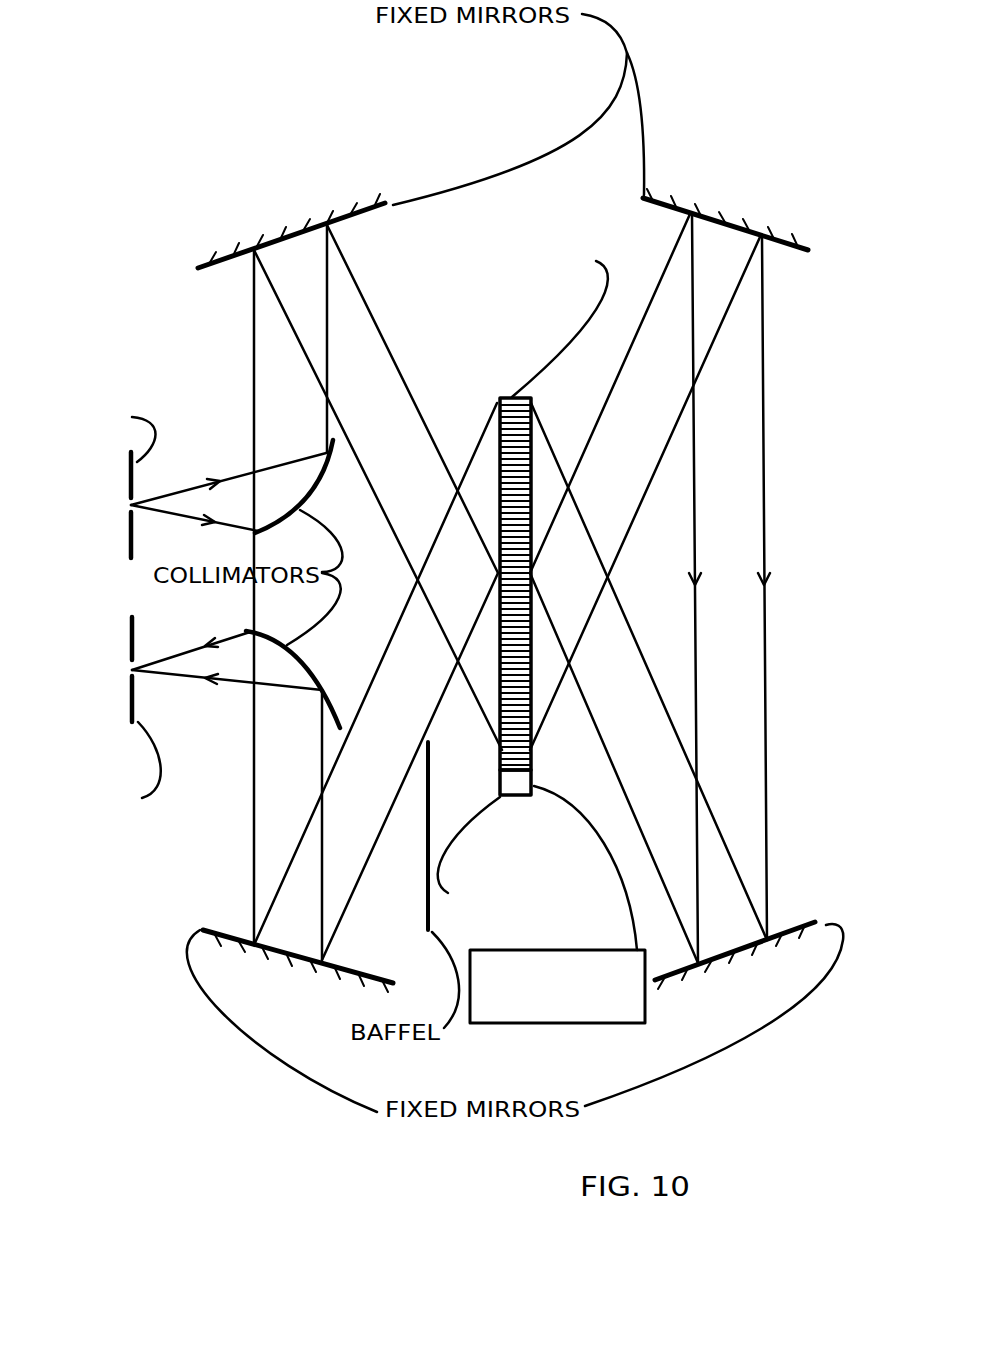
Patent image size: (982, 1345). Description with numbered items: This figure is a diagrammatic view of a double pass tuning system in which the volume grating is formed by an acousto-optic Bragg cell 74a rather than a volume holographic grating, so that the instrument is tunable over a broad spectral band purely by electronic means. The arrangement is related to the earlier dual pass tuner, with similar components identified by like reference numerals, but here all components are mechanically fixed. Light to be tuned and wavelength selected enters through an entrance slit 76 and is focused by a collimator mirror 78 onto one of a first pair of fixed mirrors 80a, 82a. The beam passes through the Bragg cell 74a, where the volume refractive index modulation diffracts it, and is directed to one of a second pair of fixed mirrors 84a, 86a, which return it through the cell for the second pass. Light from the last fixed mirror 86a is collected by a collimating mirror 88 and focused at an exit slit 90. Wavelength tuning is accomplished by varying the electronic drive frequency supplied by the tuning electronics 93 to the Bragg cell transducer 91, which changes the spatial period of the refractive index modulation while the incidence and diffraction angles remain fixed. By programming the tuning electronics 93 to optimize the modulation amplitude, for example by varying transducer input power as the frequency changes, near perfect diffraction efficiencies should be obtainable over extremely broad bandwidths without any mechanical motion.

The fixed mirror 80a is at (198, 266).
The fixed mirror 82a is at (813, 248).
The fixed mirror 84a is at (852, 866).
The fixed mirror 86a is at (203, 923).
The acousto-optic Bragg cell 74a is at (507, 393).
The entrance slit 76 is at (138, 474).
The collimator mirror 78 is at (316, 486).
The collimating mirror 88 is at (293, 653).
The exit slit 90 is at (140, 638).
The Bragg cell transducer 91 is at (540, 778).
The tuning electronics 93 is at (650, 1010).